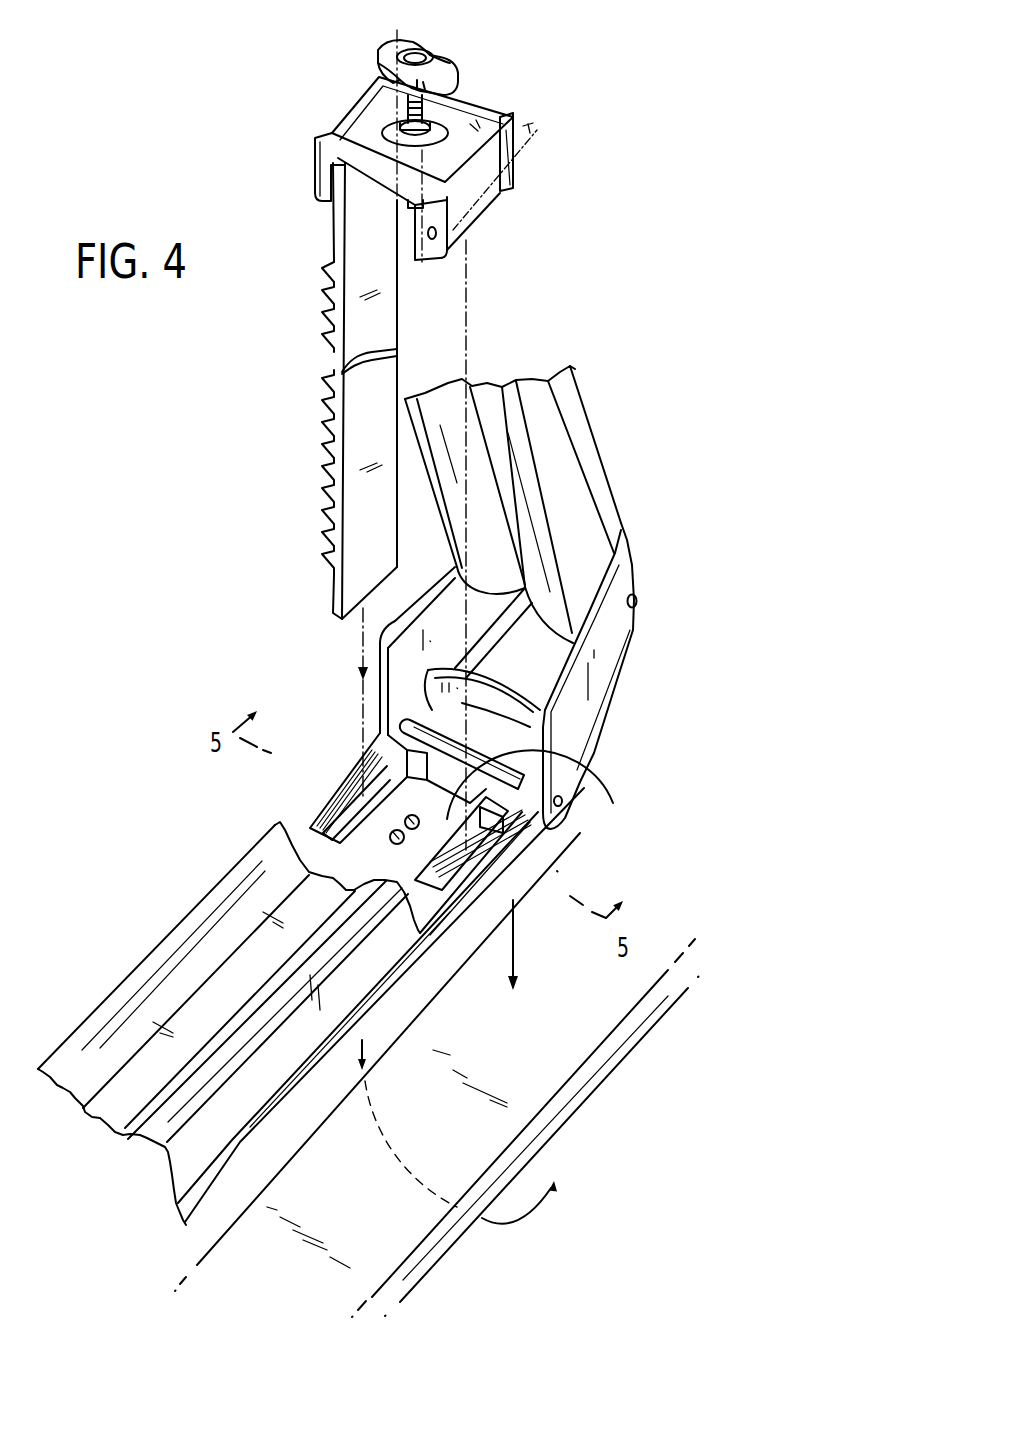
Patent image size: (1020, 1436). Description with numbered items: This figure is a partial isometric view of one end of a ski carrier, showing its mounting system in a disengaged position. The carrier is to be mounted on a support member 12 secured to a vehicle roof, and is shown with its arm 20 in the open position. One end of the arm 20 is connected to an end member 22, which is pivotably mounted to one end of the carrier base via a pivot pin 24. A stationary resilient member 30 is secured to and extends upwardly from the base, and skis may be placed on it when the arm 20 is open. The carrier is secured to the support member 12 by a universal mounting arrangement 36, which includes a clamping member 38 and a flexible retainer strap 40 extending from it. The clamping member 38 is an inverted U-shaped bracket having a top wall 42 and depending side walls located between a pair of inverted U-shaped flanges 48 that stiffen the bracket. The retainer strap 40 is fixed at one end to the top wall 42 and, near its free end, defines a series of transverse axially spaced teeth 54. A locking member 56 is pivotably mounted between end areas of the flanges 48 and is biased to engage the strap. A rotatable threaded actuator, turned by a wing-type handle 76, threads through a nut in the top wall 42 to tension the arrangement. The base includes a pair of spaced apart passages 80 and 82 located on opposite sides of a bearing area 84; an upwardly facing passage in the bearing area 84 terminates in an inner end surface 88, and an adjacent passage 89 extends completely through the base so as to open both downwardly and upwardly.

The support member 12 is at (620, 1066).
The arm 20 is at (485, 650).
The end member 22 is at (625, 673).
The pivot pin 24 is at (539, 789).
The stationary resilient member 30 is at (149, 938).
The universal mounting arrangement 36 is at (334, 391).
The clamping member 38 is at (429, 131).
The retainer strap 40 is at (405, 271).
The top wall 42 is at (465, 128).
The flanges 48 is at (323, 131).
The teeth 54 is at (327, 452).
The locking member 56 is at (497, 145).
The wing-type handle 76 is at (398, 38).
The passage 80 is at (388, 768).
The passage 82 is at (455, 872).
The bearing area 84 is at (540, 750).
The inner end surface 88 is at (405, 817).
The passage 89 is at (392, 836).